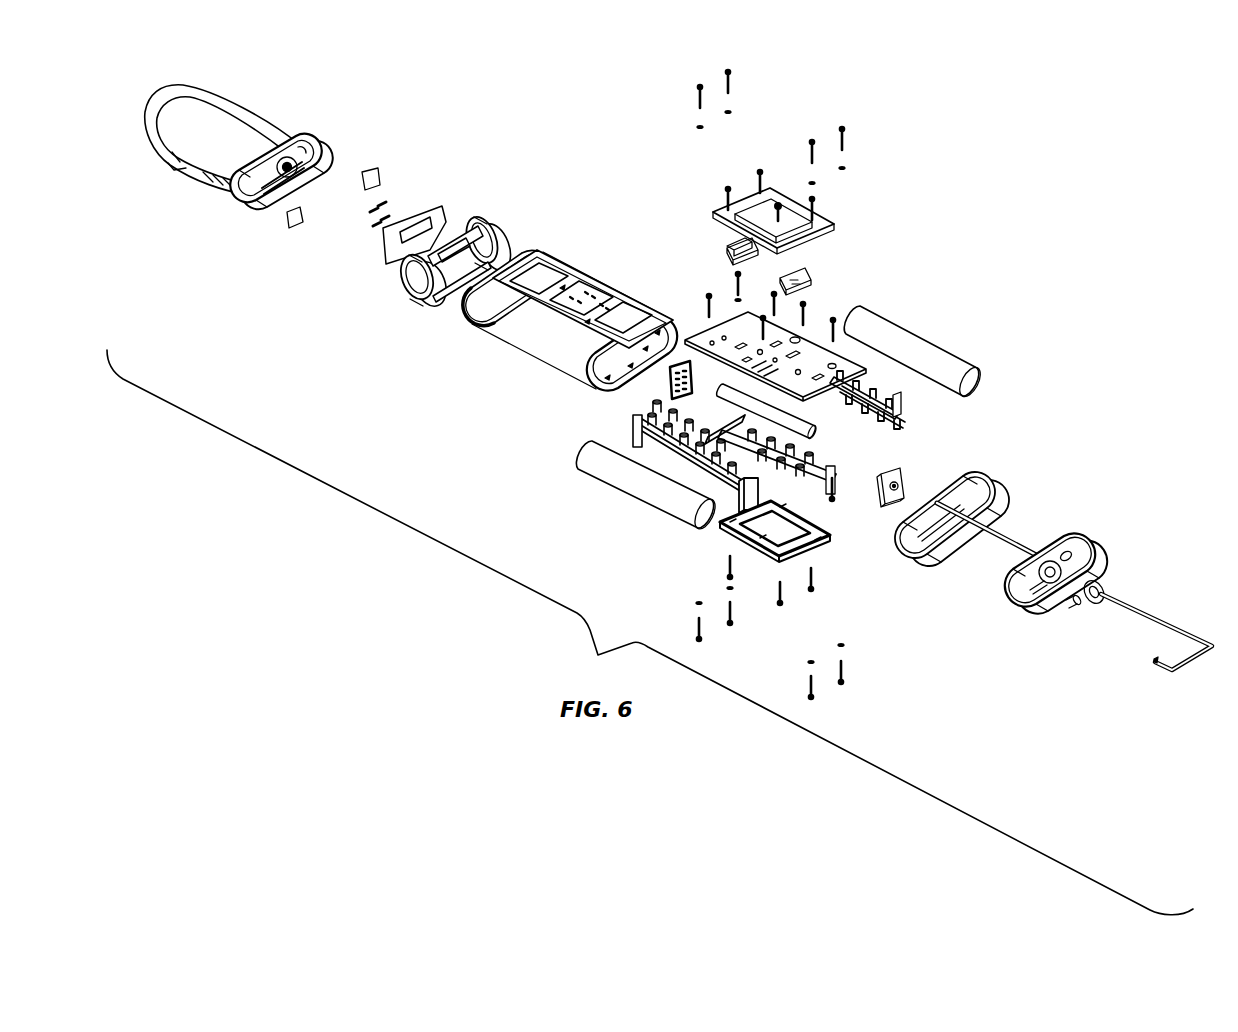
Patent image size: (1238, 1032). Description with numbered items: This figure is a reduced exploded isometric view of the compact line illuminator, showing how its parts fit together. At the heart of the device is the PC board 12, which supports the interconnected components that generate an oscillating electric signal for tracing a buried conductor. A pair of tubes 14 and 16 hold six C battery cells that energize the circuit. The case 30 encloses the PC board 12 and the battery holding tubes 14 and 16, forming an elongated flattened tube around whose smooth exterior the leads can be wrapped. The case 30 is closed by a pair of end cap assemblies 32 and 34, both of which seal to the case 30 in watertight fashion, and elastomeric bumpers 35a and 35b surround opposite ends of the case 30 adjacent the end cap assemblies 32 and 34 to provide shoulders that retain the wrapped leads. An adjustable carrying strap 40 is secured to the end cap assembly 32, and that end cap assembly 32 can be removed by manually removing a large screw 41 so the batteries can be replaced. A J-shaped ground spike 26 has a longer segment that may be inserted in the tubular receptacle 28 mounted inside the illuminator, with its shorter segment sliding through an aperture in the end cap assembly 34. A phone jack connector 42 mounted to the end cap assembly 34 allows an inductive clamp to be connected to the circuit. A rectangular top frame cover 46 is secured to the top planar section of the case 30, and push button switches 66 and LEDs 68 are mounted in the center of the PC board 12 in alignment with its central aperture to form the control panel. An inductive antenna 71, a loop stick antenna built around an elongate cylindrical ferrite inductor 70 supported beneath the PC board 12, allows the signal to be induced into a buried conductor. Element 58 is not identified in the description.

The PC board 12 is at (692, 337).
The tube 14 is at (645, 500).
The tube 16 is at (918, 335).
The J-shaped ground spike 26 is at (1157, 612).
The tubular receptacle 28 is at (1010, 528).
The case 30 is at (601, 284).
The end cap assembly 32 is at (320, 140).
The end cap assembly 34 is at (1015, 600).
The elastomeric bumper 35a is at (405, 284).
The elastomeric bumper 35b is at (900, 553).
The adjustable carrying strap 40 is at (234, 100).
The large screw 41 is at (302, 186).
The phone jack connector 42 is at (905, 475).
The rectangular top frame cover 46 is at (776, 196).
The bottom frame 58 is at (748, 524).
The push button switches 66 is at (766, 373).
The LEDs 68 is at (770, 330).
The elongate cylindrical ferrite inductor 70 is at (818, 438).
The inductive antenna 71 is at (745, 410).